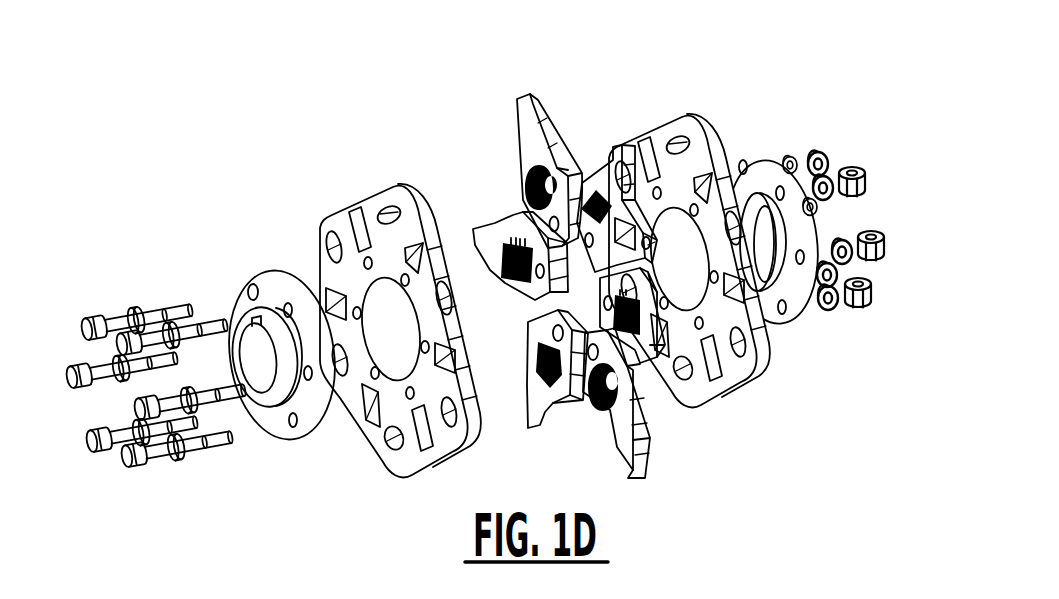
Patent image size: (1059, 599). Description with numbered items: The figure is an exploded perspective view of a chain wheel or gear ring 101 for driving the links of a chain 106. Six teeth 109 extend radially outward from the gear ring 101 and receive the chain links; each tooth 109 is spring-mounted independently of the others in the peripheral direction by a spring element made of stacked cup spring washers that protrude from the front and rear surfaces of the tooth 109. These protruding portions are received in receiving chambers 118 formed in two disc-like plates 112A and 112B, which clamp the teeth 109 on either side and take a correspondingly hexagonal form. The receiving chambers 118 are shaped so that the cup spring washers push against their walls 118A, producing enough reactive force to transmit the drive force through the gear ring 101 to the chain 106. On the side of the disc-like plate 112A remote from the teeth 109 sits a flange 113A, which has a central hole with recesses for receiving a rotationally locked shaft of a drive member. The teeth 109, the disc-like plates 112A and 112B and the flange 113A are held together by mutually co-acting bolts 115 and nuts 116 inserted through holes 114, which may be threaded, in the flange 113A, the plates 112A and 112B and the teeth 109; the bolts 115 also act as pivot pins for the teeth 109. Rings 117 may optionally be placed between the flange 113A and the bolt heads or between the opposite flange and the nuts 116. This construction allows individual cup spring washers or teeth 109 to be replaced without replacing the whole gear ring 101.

The gear ring 101 is at (245, 128).
The chain 106 is at (800, 300).
The teeth 109 is at (520, 130).
The disc-like plate 112A is at (378, 205).
The disc-like plate 112B is at (657, 135).
The flange 113A is at (282, 282).
The holes 114 is at (248, 295).
The bolts 115 is at (86, 326).
The nuts 116 is at (820, 152).
The rings 117 is at (789, 156).
The receiving chambers 118 is at (396, 212).
The walls 118A is at (413, 247).